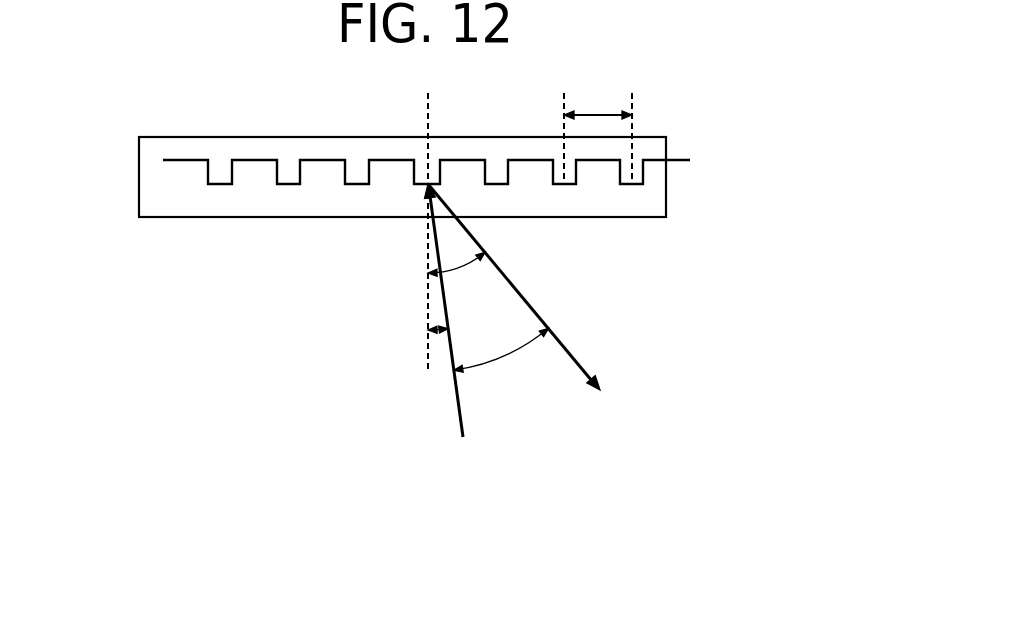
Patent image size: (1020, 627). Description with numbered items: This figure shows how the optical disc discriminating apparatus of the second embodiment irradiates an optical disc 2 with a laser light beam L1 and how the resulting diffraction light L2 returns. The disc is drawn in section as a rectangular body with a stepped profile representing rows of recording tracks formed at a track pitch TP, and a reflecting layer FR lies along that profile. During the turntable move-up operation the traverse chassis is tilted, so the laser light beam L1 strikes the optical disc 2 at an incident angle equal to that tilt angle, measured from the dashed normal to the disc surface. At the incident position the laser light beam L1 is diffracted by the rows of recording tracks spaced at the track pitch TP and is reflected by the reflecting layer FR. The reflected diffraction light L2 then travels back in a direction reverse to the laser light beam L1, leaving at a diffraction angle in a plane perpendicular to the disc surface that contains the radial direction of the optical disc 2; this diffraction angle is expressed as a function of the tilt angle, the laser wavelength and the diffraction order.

The optical disc 2 is at (411, 230).
The reflecting layer FR is at (454, 214).
The track pitch TP is at (598, 129).
The laser light beam L1 is at (431, 341).
The diffraction light L2 is at (523, 287).